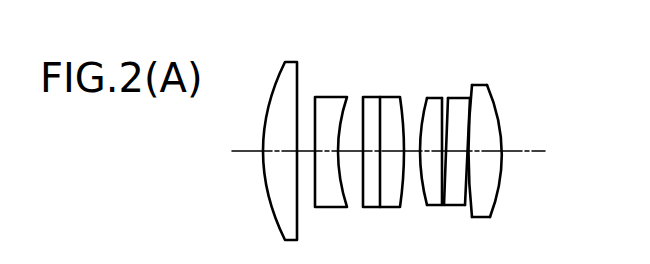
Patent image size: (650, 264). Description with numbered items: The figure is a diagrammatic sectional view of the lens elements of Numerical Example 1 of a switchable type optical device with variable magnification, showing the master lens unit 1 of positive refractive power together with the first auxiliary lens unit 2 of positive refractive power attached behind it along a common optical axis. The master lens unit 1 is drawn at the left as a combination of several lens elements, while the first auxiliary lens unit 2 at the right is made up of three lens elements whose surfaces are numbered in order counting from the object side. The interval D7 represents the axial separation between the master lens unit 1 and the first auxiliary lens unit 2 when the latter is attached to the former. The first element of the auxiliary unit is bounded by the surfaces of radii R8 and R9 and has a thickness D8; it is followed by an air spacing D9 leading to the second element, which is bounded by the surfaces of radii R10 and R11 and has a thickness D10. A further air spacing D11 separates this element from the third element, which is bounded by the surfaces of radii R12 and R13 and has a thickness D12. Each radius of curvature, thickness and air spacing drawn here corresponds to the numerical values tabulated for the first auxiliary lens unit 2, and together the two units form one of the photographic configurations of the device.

The master lens unit 1 is at (380, 29).
The first auxiliary lens unit 2 is at (545, 29).
The radius of curvature of the eighth lens surface R8 is at (423, 103).
The radius of curvature of the ninth lens surface R9 is at (442, 103).
The radius of curvature of the tenth lens surface R10 is at (449, 100).
The radius of curvature of the eleventh lens surface R11 is at (468, 99).
The radius of curvature of the twelfth lens surface R12 is at (476, 94).
The radius of curvature of the thirteenth lens surface R13 is at (494, 99).
The interval between master lens unit and auxiliary lens unit D7 is at (417, 160).
The lens thickness of the first auxiliary lens element D8 is at (438, 160).
The air spacing after the first auxiliary lens element D9 is at (447, 160).
The lens thickness of the second auxiliary lens element D10 is at (460, 162).
The air spacing after the second auxiliary lens element D11 is at (472, 165).
The lens thickness of the third auxiliary lens element D12 is at (492, 168).